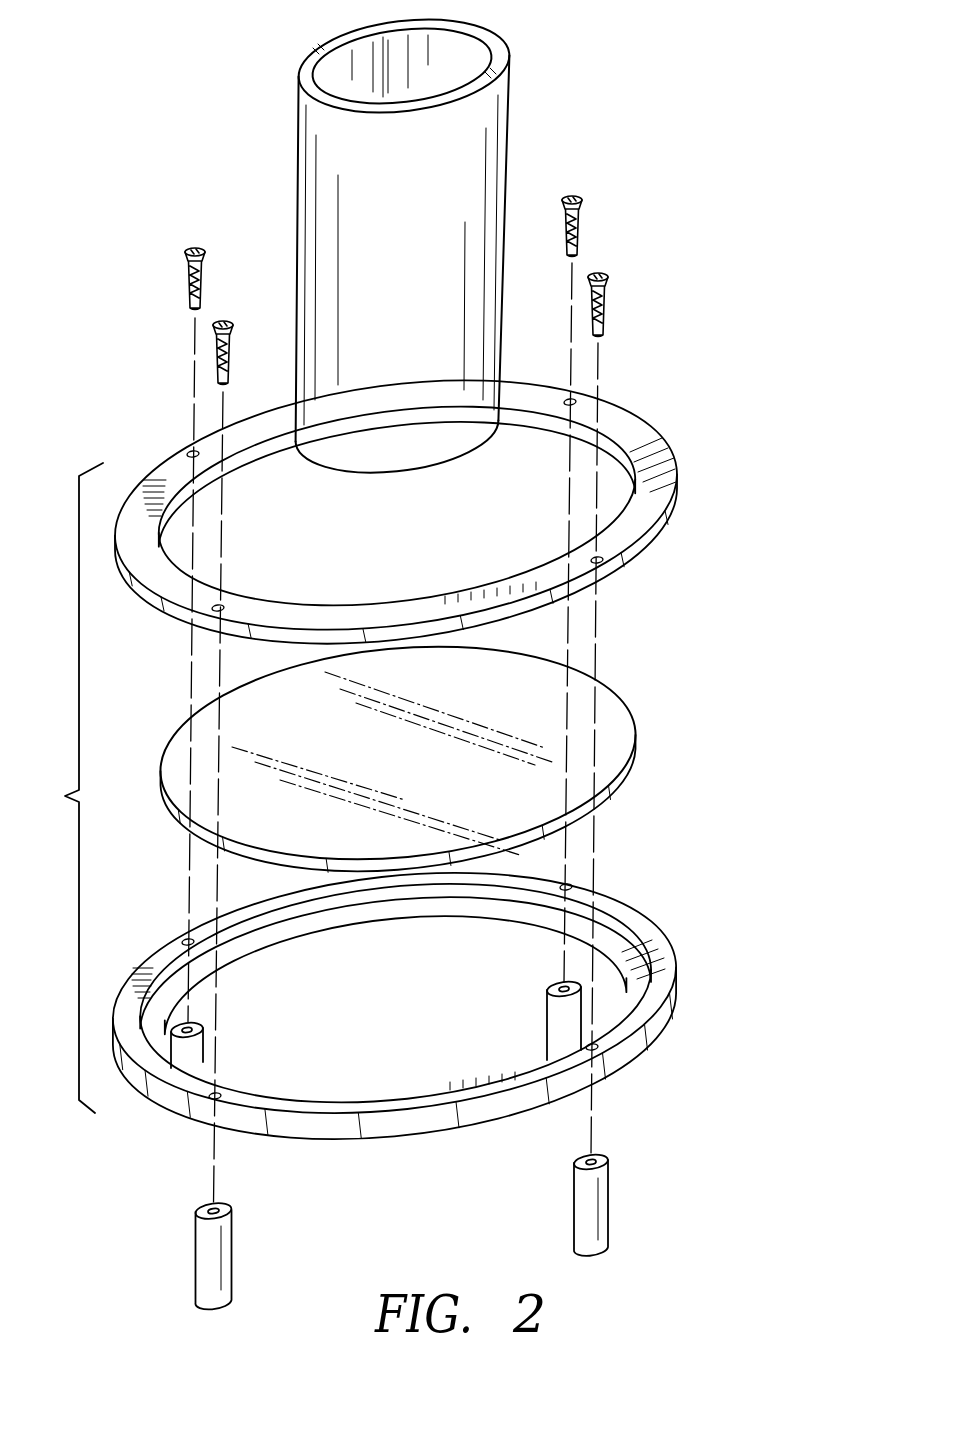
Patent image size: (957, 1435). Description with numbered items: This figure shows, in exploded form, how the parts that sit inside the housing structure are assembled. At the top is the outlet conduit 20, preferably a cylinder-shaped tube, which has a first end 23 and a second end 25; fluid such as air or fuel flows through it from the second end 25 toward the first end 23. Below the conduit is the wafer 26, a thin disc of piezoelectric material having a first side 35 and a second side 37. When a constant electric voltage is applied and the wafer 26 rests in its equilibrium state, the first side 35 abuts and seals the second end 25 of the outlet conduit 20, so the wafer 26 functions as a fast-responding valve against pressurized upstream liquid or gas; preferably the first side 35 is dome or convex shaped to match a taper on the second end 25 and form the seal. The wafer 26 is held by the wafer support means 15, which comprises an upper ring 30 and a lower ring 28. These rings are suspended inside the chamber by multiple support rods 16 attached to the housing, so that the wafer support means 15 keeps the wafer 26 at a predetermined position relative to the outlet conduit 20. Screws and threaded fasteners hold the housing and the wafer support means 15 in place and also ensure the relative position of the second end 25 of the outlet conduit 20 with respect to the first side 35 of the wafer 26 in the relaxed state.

The wafer support means 15 is at (314, 700).
The support rods 16 is at (185, 1058).
The outlet conduit 20 is at (286, 150).
The first end 23 is at (306, 72).
The second end 25 is at (352, 462).
The wafer 26 is at (460, 765).
The lower ring 28 is at (684, 921).
The upper ring 30 is at (686, 433).
The first side 35 is at (178, 768).
The second side 37 is at (180, 828).